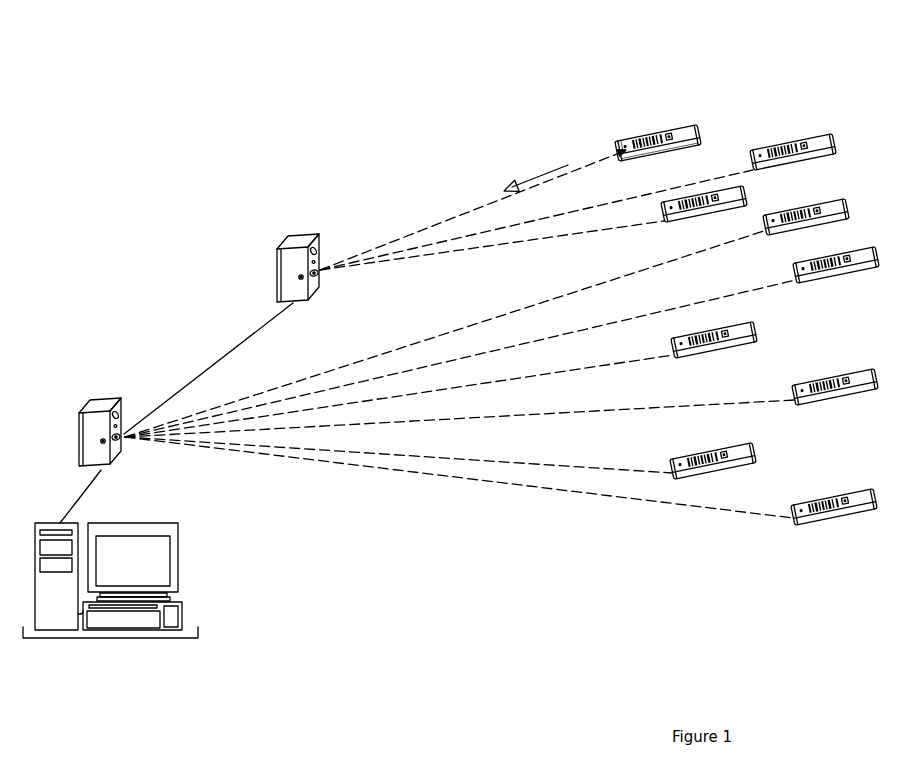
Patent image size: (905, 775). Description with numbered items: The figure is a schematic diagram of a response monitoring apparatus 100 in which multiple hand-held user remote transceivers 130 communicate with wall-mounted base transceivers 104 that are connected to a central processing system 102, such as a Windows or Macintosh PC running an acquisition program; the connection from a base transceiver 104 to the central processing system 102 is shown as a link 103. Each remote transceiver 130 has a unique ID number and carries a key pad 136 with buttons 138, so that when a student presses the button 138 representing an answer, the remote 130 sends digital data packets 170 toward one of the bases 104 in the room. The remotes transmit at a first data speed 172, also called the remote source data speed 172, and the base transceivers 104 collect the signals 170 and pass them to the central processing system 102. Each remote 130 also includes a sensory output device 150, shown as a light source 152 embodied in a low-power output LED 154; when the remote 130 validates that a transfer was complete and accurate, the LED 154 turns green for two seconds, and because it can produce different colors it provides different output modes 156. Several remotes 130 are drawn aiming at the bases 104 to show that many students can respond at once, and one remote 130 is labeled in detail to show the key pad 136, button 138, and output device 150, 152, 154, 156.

The response monitoring apparatus 100 is at (438, 129).
The central processing system 102 is at (101, 640).
The communication cable 103 is at (78, 508).
The base transceiver 104 is at (302, 235).
The user remote transceiver 130 is at (688, 122).
The key pad 136 is at (663, 130).
The button 138 is at (672, 147).
The sensory output device 150 is at (623, 153).
The light source 152 is at (628, 152).
The output LED 154 is at (640, 150).
The output modes 156 is at (758, 155).
The remote source data packet 170 is at (427, 228).
The first data speed 172 is at (536, 175).